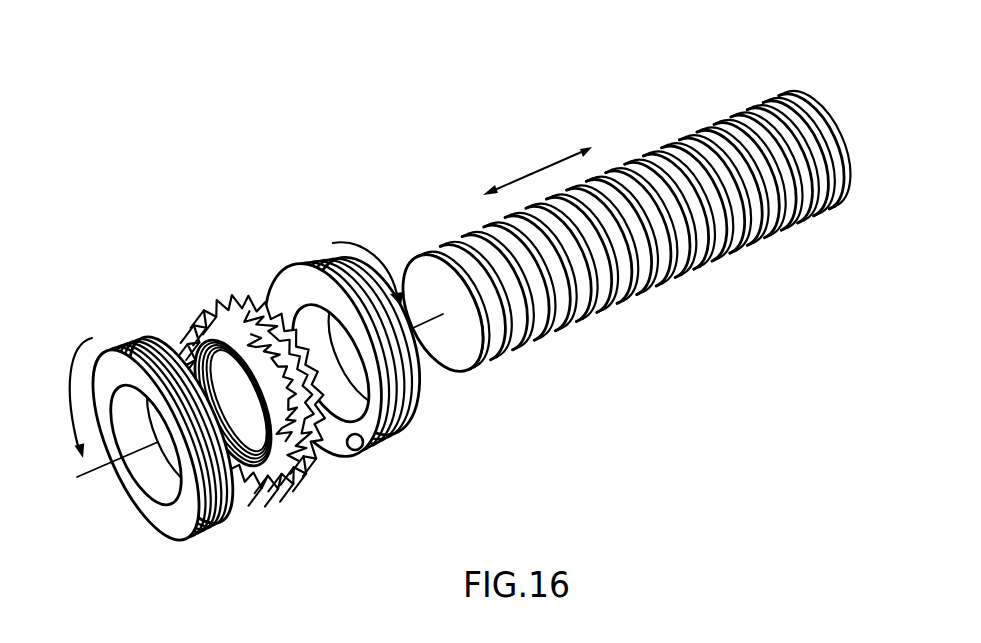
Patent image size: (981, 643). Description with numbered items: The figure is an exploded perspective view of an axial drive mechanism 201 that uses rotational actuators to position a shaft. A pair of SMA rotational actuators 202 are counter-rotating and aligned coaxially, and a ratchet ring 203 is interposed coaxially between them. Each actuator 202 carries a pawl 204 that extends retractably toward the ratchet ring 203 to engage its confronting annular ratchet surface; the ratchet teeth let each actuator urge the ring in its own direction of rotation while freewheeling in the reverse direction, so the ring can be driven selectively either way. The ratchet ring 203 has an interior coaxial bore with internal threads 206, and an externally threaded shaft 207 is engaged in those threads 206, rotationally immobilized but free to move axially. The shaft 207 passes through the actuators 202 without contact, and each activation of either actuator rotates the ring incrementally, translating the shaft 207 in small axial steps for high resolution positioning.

The axial drive mechanism 201 is at (158, 186).
The SMA rotational actuators 202 is at (318, 262).
The ratchet ring 203 is at (220, 298).
The pawl 204 is at (359, 450).
The internal threads 206 is at (252, 497).
The externally threaded shaft 207 is at (633, 297).